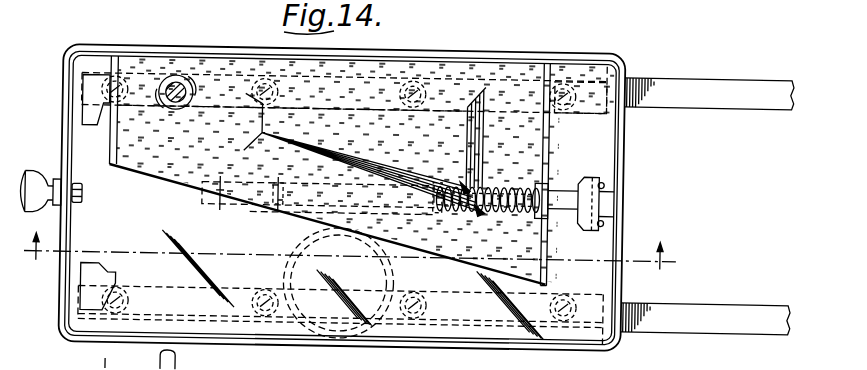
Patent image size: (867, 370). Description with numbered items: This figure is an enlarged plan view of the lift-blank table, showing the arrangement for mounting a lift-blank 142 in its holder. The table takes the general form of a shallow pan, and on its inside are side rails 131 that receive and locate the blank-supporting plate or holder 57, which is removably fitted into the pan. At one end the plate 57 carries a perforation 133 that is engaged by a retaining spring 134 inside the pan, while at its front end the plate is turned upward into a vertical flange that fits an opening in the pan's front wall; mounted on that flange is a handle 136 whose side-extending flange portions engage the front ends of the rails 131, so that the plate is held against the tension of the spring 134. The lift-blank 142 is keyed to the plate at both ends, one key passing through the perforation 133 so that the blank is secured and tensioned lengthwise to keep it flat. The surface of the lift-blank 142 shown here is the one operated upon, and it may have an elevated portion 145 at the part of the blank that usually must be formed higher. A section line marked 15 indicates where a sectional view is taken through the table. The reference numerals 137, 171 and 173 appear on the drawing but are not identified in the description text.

The blank-supporting plate or holder 57 is at (480, 331).
The section line 15- 15 is at (349, 262).
The side rails 131 is at (114, 278).
The perforation 133 is at (594, 173).
The retaining spring 134 is at (602, 215).
The handle 136 is at (43, 185).
The knob shaft 137 is at (57, 212).
The lift-blank 142 is at (357, 228).
The elevated portion 145 is at (468, 149).
The latch bracket 171 is at (110, 127).
The spring flange 173 is at (545, 178).